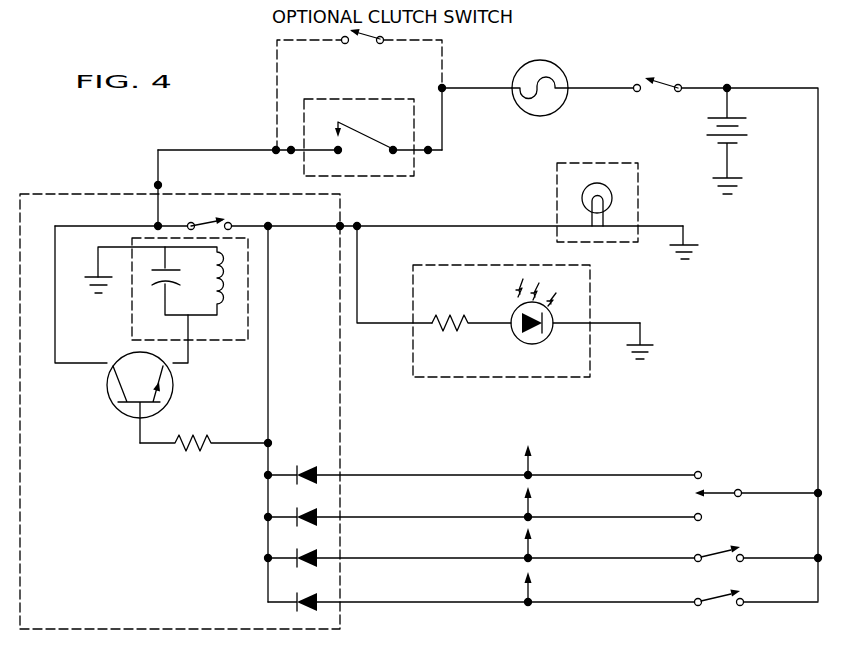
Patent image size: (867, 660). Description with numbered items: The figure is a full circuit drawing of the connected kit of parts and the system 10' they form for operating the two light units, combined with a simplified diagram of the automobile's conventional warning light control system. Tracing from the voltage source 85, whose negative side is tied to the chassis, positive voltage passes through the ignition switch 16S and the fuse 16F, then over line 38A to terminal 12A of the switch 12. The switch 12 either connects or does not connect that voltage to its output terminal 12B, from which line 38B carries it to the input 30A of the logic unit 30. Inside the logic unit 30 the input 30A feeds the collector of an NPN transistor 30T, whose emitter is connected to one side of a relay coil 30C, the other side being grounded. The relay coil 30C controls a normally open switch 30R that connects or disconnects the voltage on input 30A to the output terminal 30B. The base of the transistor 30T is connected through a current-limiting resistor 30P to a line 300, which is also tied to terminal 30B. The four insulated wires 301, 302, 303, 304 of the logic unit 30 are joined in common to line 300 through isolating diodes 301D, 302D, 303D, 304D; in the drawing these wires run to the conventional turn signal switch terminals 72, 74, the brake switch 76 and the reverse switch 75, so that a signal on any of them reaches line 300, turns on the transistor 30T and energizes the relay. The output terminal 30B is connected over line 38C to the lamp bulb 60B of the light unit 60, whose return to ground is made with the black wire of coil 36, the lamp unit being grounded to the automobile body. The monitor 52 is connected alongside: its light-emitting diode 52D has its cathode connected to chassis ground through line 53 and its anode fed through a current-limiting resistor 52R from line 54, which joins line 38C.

The line 38B is at (192, 149).
The input terminal 30A is at (157, 184).
The output terminal 12B is at (276, 152).
The switch 12 is at (365, 130).
The input terminal 12A is at (428, 151).
The line 38A is at (443, 108).
The fuse 16F is at (552, 62).
The ignition switch 16S is at (662, 78).
The voltage source 85 is at (747, 128).
The light unit 60 is at (642, 189).
The lamp bulb 60B is at (600, 184).
The line 38C is at (477, 225).
The coil of insulated electric wire 36 is at (655, 226).
The logic unit 30 is at (176, 557).
The normally open switch 30R is at (208, 218).
The output terminal 30B is at (343, 222).
The relay coil 30C is at (222, 280).
The NPN transistor 30T is at (173, 385).
The current-limiting resistor 30P is at (192, 450).
The line 300 is at (268, 400).
The line 54 is at (357, 300).
The monitor 52 is at (594, 299).
The current-limiting resistor 52R is at (445, 318).
The light-emitting diode 52D is at (520, 340).
The line 53 is at (640, 322).
The system 10' is at (447, 410).
The isolating diode 301D is at (320, 452).
The isolating diode 302D is at (320, 498).
The isolating diode 303D is at (318, 541).
The isolating diode 304D is at (318, 584).
The insulated wire 301 is at (427, 473).
The insulated wire 302 is at (430, 516).
The insulated wire 303 is at (430, 556).
The insulated wire 304 is at (430, 600).
The turn signal switch terminal 72 is at (668, 470).
The turn signal switch terminal 74 is at (668, 515).
The brake switch 76 is at (684, 556).
The reverse switch 75 is at (684, 600).